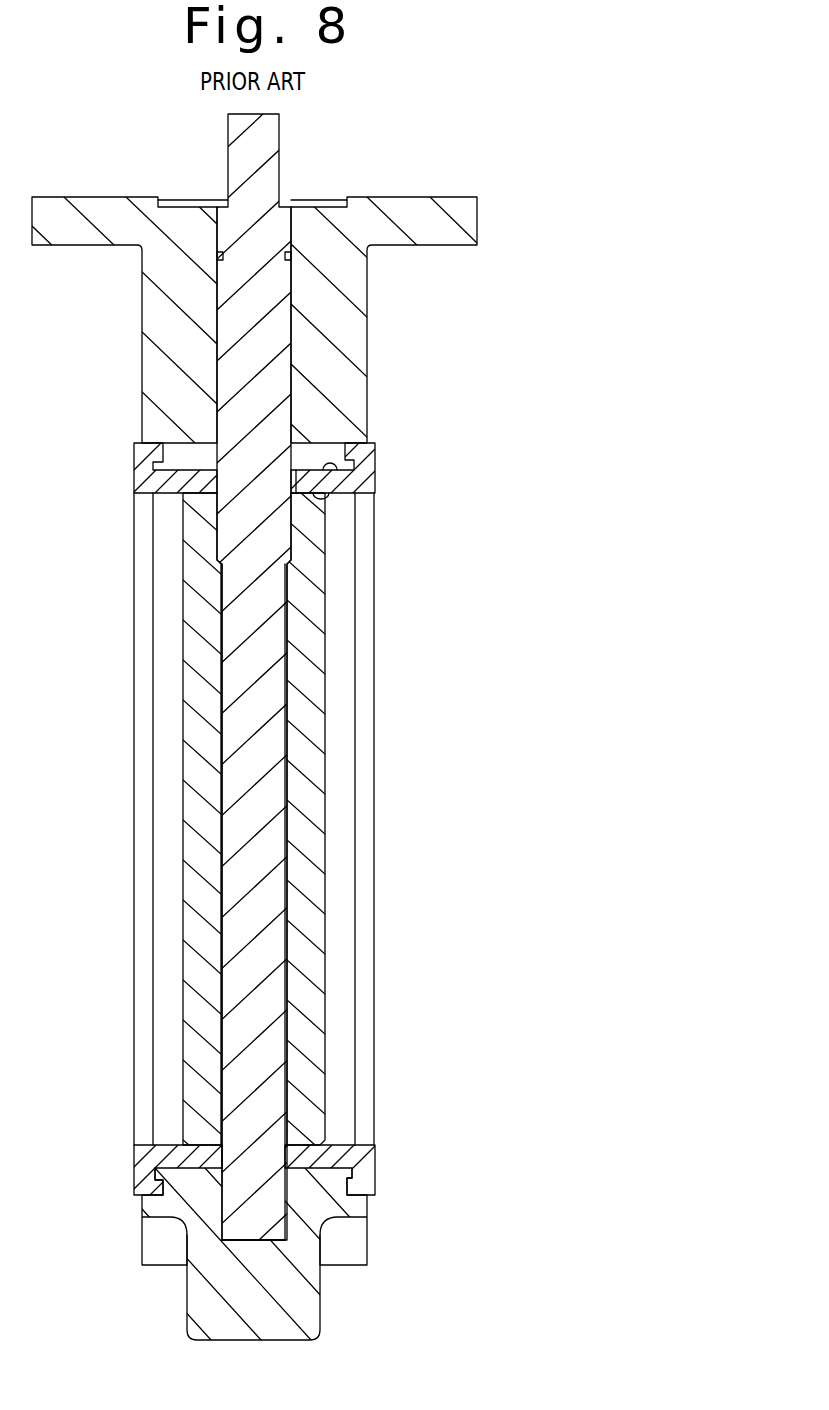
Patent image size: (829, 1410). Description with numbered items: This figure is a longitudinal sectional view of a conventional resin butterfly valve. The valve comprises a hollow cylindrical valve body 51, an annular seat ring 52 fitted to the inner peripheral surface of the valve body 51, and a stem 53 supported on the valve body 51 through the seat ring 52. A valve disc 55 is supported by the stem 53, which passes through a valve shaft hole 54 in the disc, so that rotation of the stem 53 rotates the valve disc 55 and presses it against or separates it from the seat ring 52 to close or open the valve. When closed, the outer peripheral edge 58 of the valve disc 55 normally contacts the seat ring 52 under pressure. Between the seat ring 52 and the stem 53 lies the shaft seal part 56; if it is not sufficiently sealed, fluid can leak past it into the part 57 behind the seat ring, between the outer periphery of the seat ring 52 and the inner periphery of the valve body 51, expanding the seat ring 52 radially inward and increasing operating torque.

The valve body 51 is at (332, 313).
The seat ring 52 is at (375, 448).
The stem 53 is at (257, 398).
The valve shaft hole 54 is at (287, 622).
The valve disc 55 is at (305, 845).
The shaft seal part 56 is at (350, 490).
The part behind the seat ring 57 is at (350, 478).
The outer peripheral edge of the valve disc 58 is at (327, 490).